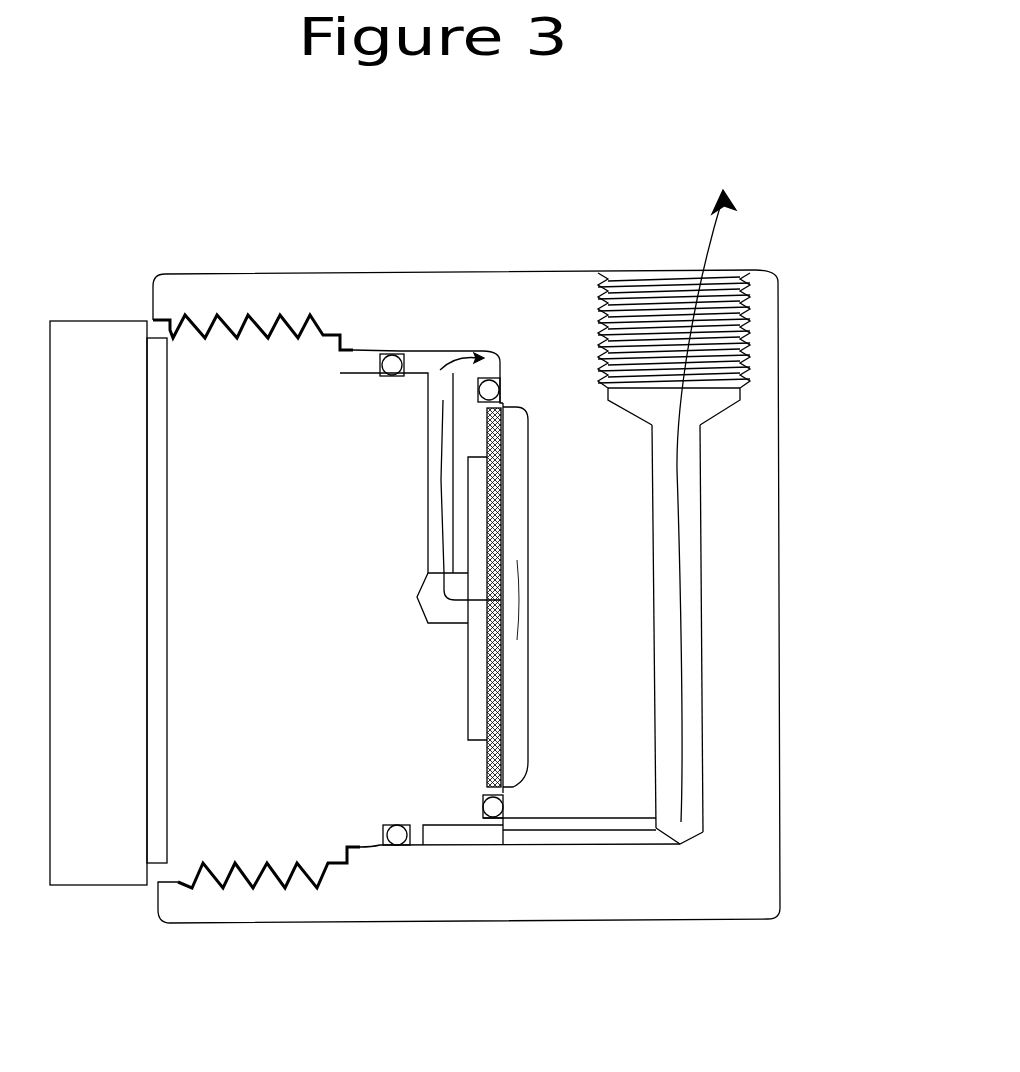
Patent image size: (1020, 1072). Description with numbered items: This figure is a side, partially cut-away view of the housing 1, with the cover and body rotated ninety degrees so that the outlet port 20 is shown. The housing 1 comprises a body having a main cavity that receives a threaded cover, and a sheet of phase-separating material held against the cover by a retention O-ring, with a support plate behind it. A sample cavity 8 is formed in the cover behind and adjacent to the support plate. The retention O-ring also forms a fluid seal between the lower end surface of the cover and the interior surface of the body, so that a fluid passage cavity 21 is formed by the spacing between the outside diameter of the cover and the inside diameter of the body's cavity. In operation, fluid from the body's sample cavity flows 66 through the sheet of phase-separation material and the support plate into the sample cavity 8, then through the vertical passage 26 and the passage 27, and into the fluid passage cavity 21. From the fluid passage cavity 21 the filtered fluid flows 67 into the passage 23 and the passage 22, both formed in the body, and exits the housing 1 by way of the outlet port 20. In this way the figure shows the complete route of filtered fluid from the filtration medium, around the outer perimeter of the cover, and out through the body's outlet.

The housing 1 is at (562, 266).
The sample cavity 8 is at (517, 548).
The outlet port 20 is at (672, 273).
The fluid passage cavity 21 is at (473, 350).
The passage 22 is at (675, 730).
The passage 23 is at (613, 835).
The vertical passage 26 is at (440, 612).
The passage 27 is at (440, 400).
The fluid flow 66 is at (440, 503).
The fluid flow 67 is at (680, 592).